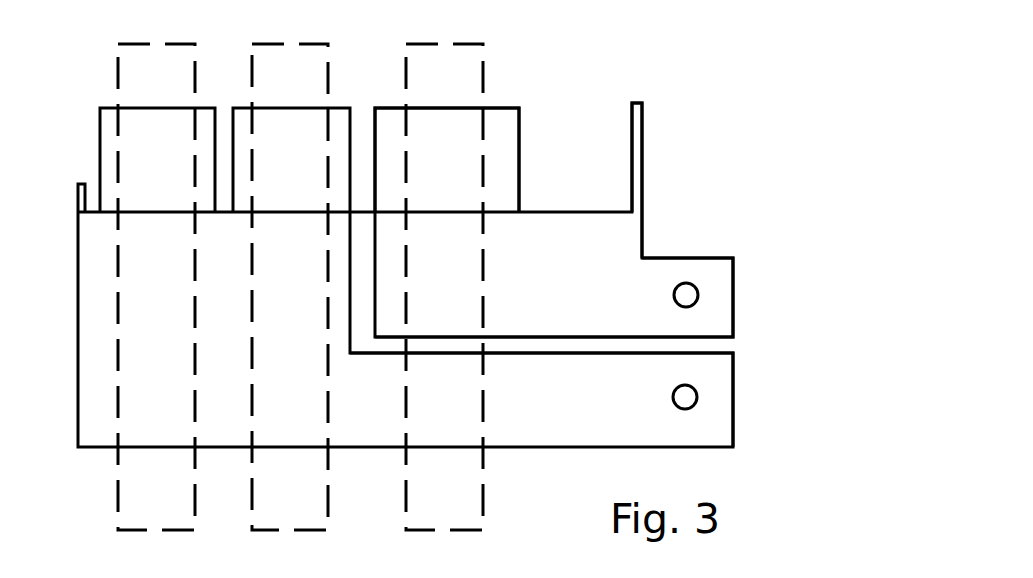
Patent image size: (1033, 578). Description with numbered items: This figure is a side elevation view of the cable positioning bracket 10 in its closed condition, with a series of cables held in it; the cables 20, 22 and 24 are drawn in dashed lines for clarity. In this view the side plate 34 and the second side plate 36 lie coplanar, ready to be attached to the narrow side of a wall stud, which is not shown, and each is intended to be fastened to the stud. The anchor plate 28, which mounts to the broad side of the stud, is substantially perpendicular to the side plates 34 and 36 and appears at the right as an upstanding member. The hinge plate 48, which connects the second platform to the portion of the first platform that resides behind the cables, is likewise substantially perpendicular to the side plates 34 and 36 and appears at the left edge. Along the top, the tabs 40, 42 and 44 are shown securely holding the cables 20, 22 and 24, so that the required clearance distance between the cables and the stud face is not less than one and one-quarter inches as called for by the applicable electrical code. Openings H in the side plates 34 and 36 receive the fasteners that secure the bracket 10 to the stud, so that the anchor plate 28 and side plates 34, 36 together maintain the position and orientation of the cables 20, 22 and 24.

The cable positioning bracket 10 is at (592, 87).
The cable 20 is at (177, 509).
The cable 22 is at (305, 507).
The cable 24 is at (453, 499).
The anchor plate 28 is at (642, 126).
The side plate 34 is at (592, 309).
The second side plate 36 is at (593, 412).
The tab 40 is at (213, 108).
The tab 42 is at (345, 107).
The tab 44 is at (502, 108).
The hinge plate 48 is at (78, 197).
The hole H is at (697, 397).